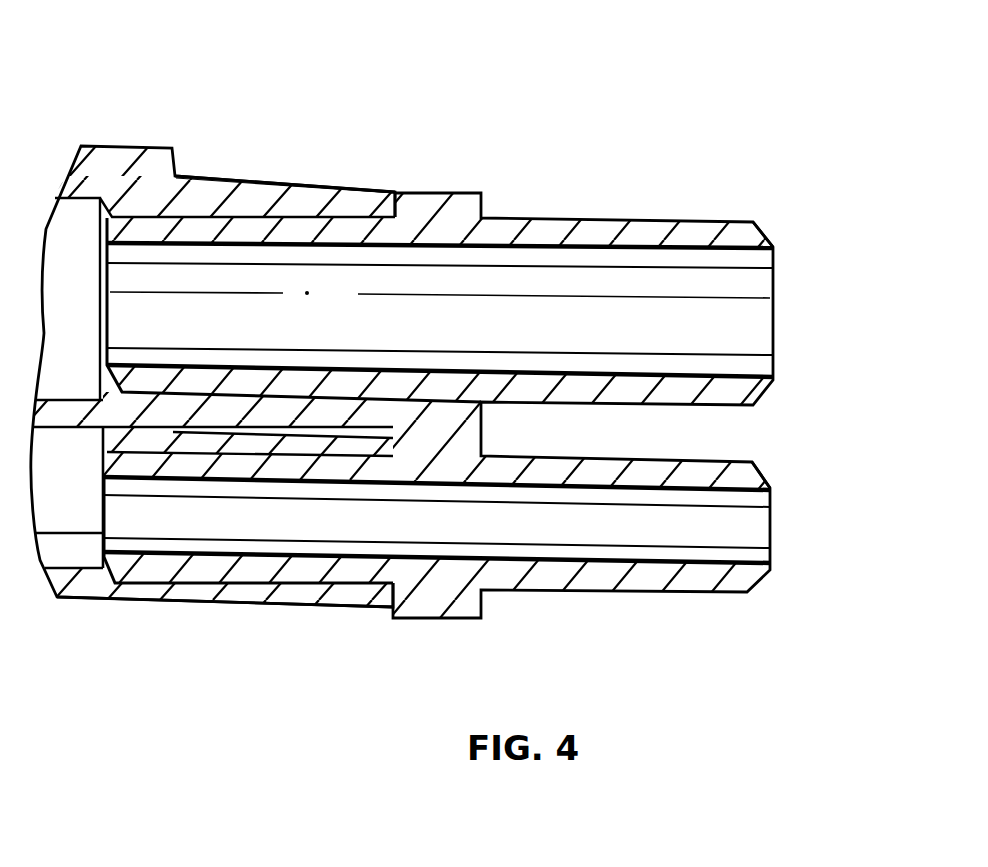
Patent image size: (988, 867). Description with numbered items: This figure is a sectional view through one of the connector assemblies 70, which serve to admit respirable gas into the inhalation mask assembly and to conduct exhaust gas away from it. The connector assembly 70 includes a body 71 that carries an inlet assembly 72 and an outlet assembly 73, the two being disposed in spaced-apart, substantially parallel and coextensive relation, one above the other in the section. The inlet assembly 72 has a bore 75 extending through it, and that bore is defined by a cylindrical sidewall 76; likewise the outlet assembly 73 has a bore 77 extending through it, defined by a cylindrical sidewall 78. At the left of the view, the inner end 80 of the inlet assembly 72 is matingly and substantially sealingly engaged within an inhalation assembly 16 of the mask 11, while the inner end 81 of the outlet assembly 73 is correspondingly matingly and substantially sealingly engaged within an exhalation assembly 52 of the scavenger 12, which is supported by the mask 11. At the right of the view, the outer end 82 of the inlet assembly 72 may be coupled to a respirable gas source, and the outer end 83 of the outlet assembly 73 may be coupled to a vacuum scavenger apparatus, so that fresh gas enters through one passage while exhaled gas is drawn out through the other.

The connector assembly 70 is at (658, 146).
The body 71 is at (478, 194).
The inlet assembly 72 is at (703, 220).
The outlet assembly 73 is at (692, 593).
The bore 75 is at (652, 336).
The cylindrical sidewall 76 is at (535, 388).
The bore 77 is at (512, 534).
The cylindrical sidewall 78 is at (640, 473).
The inner end 80 is at (138, 218).
The inner end 81 is at (143, 590).
The outer end 82 is at (758, 233).
The outer end 83 is at (758, 478).
The inhalation assembly 16 is at (345, 196).
The mask 11 is at (321, 178).
The scavenger 12 is at (216, 615).
The exhalation assembly 52 is at (286, 606).